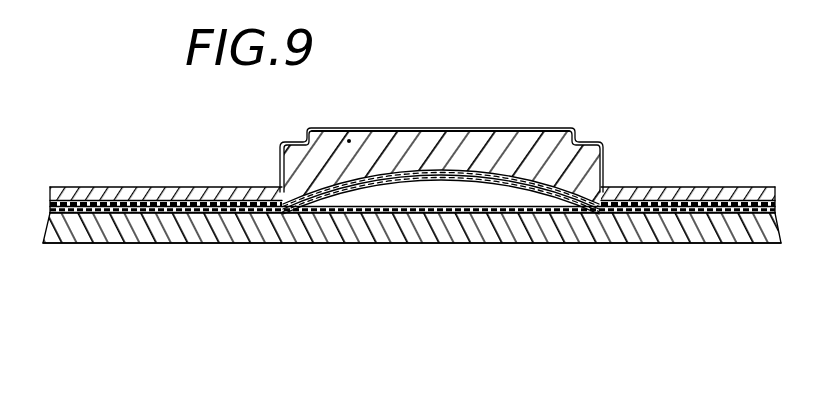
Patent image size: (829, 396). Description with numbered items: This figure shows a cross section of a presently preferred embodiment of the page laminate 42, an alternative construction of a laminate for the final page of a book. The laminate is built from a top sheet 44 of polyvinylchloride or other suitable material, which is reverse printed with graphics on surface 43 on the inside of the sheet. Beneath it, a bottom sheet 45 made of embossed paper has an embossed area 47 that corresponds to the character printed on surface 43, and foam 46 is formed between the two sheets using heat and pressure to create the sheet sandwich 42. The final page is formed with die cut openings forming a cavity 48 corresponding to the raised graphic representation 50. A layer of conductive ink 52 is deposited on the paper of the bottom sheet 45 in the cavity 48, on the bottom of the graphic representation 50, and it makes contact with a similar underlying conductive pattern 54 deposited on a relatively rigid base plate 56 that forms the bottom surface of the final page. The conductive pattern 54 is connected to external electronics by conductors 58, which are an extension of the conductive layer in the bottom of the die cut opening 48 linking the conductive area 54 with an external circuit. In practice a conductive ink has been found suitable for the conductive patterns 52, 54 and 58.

The page laminate 42 is at (640, 153).
The inside surface of top sheet 43 is at (350, 138).
The top sheet 44 is at (677, 189).
The bottom sheet 45 is at (246, 212).
The foam 46 is at (510, 142).
The embossed area 47 is at (509, 183).
The cavity 48 is at (461, 192).
The raised graphic representation 50 is at (410, 130).
The conductive ink 52 is at (444, 183).
The conductive pattern 54 is at (394, 212).
The base plate 56 is at (665, 232).
The conductors 58 is at (179, 240).